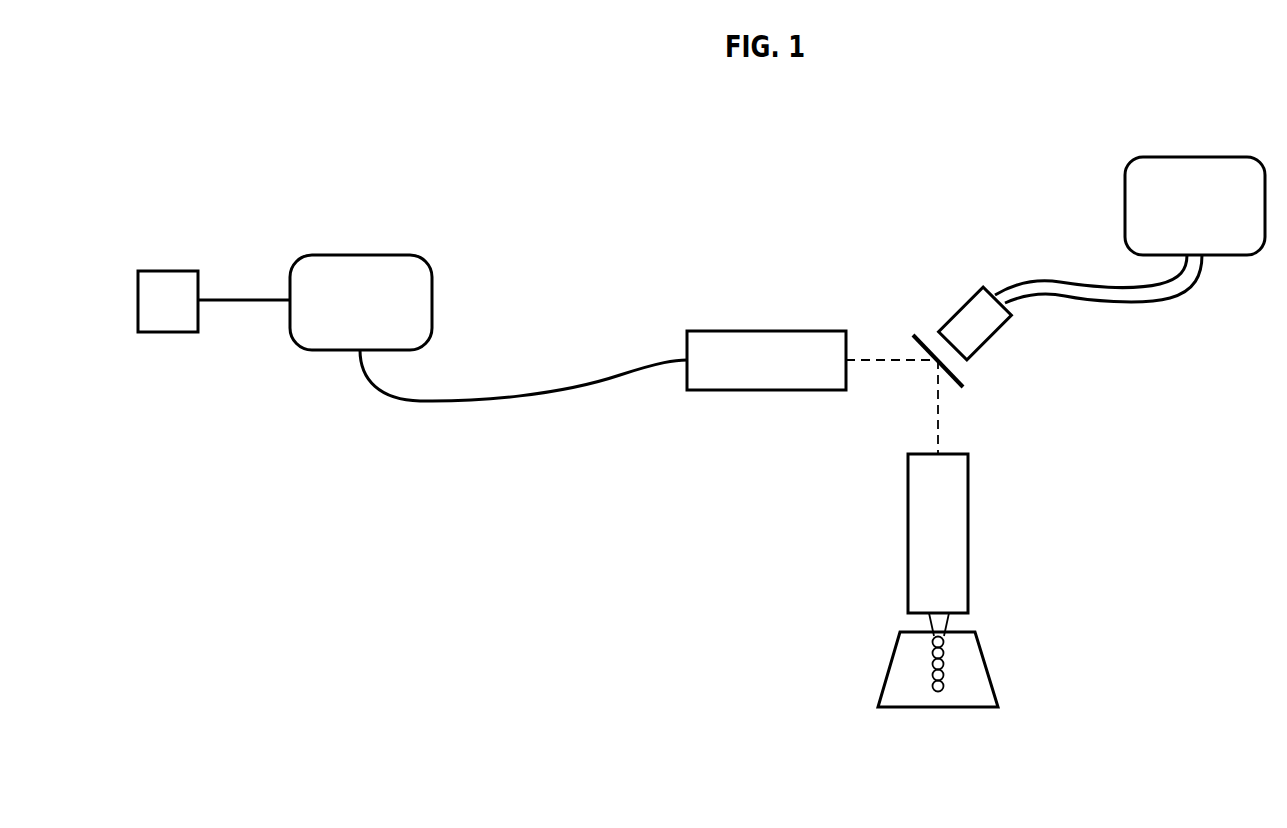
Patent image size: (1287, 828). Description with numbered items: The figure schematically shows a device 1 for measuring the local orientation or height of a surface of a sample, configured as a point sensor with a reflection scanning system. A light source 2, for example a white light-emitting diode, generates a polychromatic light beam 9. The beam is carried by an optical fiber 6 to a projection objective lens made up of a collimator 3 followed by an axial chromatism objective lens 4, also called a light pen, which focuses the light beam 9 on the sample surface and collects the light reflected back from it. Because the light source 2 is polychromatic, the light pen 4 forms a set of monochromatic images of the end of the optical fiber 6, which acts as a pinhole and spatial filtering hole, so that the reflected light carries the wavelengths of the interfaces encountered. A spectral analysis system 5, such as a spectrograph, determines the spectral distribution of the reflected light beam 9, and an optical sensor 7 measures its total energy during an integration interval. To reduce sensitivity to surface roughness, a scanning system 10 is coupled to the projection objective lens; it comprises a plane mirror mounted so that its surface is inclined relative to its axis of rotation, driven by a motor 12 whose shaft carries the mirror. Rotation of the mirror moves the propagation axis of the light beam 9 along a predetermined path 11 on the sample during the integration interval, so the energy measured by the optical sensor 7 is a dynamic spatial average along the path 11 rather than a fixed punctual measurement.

The device 1 is at (1216, 114).
The light source 2 is at (343, 312).
The collimator 3 is at (758, 372).
The axial chromatism objective lens 4 is at (930, 539).
The spectral analysis system 5 is at (967, 668).
The optical fiber 6 is at (432, 403).
The optical sensor 7 is at (158, 312).
The light beam 9 is at (876, 360).
The scanning system 10 is at (966, 370).
The predetermined path 11 is at (924, 664).
The motor 12 is at (963, 335).